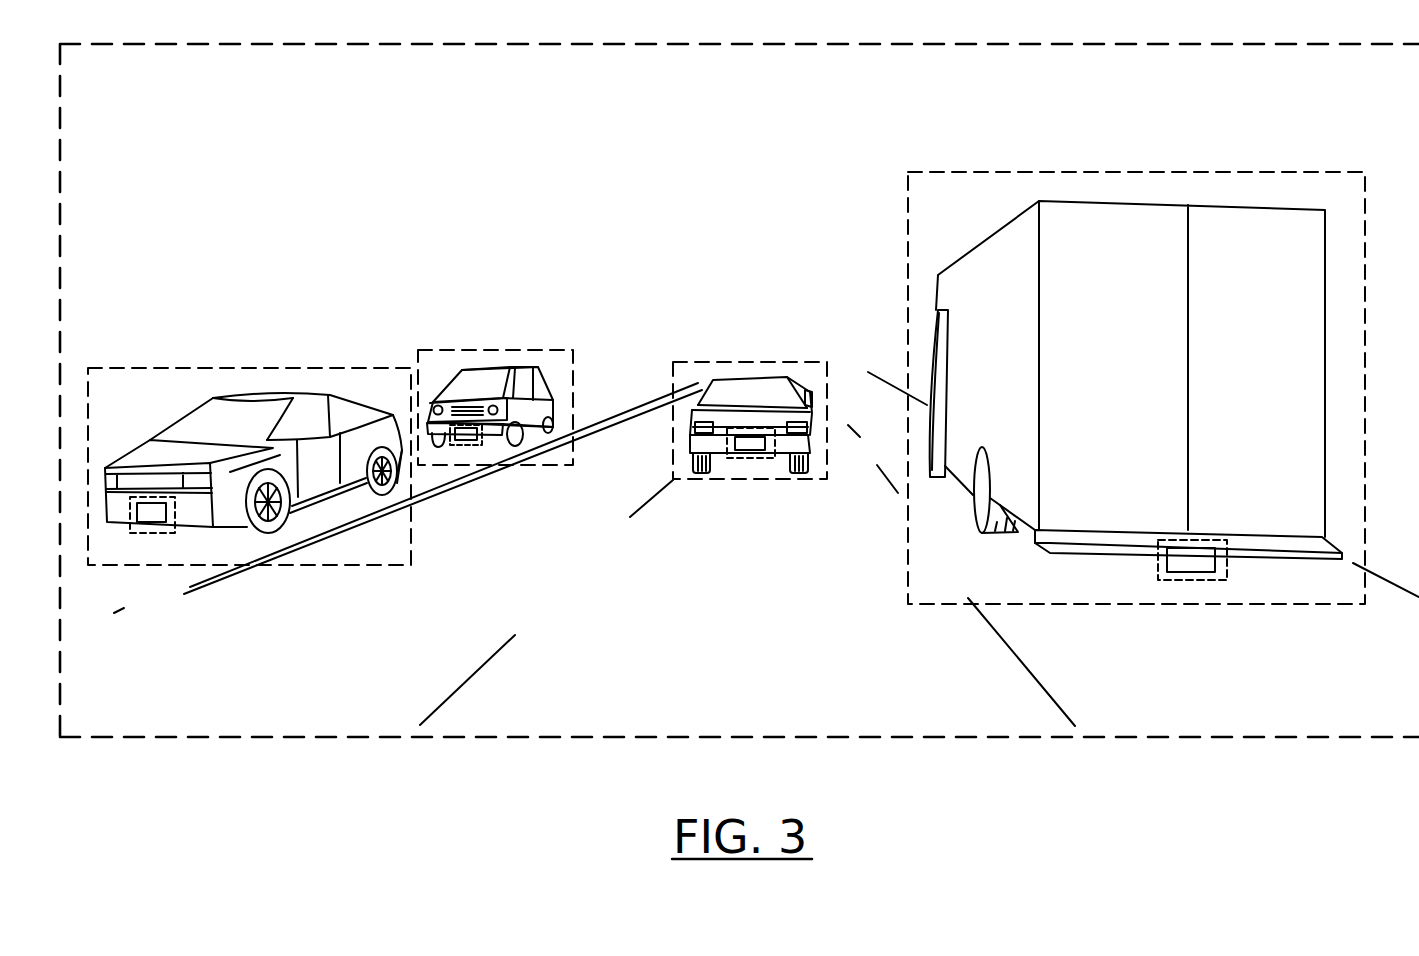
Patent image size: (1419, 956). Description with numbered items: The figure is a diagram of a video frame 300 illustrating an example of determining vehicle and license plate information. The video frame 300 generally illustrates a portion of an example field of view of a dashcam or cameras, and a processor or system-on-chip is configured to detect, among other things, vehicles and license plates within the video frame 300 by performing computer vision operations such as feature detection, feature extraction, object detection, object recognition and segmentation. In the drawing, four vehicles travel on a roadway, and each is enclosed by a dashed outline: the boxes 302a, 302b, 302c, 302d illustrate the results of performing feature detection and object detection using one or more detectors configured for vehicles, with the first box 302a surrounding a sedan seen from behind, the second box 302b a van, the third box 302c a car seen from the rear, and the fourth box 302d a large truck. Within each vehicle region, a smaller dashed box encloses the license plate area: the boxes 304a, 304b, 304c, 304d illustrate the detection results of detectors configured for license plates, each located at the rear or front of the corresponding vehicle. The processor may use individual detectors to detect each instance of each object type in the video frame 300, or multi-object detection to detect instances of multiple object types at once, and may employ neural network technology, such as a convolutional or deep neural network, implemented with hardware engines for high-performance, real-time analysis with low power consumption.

The video frame 300 is at (487, 43).
The box 302a is at (180, 367).
The box 302b is at (468, 350).
The box 302c is at (725, 362).
The box 302d is at (1005, 172).
The box 304a is at (153, 535).
The box 304b is at (472, 447).
The box 304c is at (758, 462).
The box 304d is at (1198, 587).